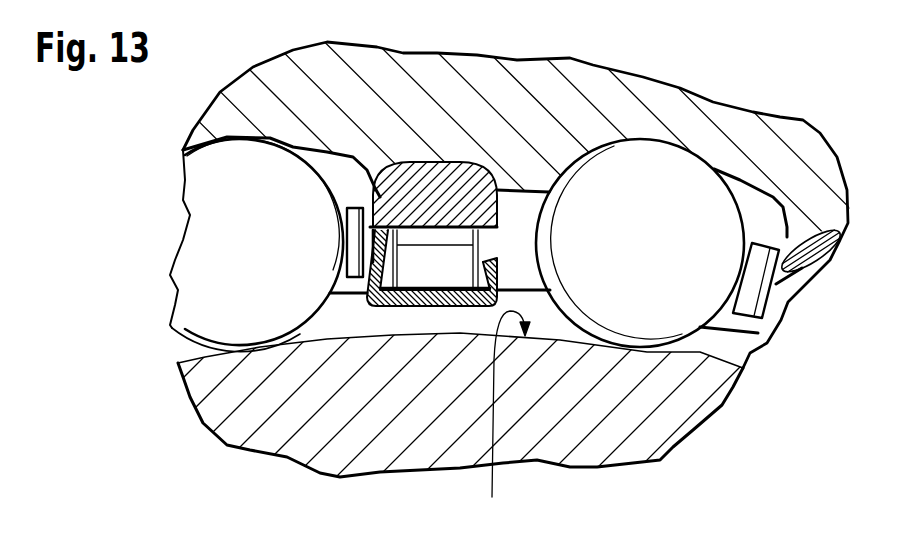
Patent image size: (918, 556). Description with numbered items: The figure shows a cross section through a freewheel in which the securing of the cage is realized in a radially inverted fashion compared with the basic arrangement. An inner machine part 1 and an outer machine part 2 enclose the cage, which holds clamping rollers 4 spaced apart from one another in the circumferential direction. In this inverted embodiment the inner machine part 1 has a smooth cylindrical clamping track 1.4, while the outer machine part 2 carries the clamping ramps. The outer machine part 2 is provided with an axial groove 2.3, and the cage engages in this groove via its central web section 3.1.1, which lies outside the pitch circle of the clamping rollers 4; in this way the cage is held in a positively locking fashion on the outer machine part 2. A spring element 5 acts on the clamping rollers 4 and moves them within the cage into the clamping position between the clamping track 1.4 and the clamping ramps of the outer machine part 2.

The inner machine part 1 is at (648, 432).
The smooth cylindrical clamping track 1.4 is at (505, 423).
The outer machine part 2 is at (762, 147).
The axial groove 2.3 is at (417, 155).
The central web section 3.1.1 is at (455, 192).
The clamping rollers 4 is at (213, 219).
The spring element 5 is at (392, 306).